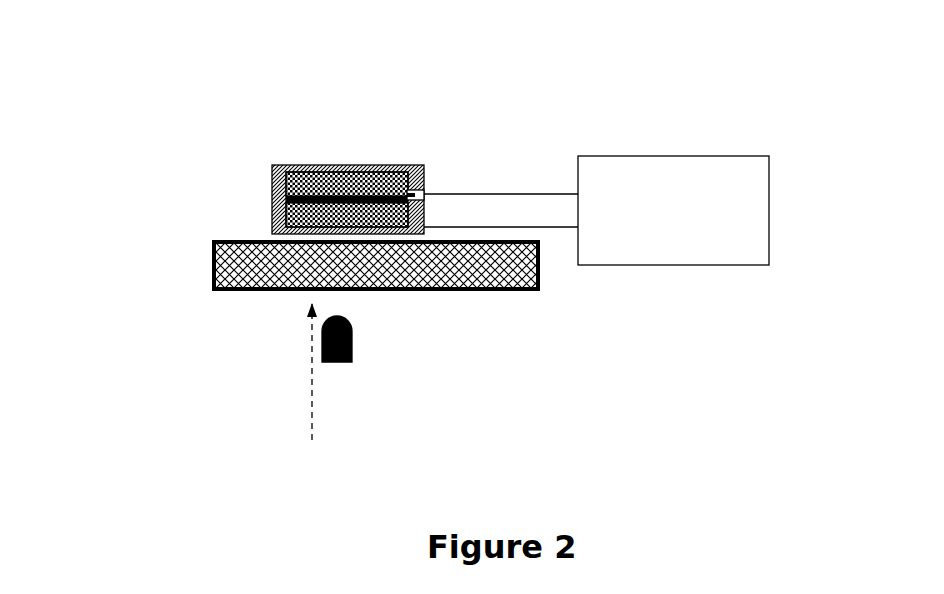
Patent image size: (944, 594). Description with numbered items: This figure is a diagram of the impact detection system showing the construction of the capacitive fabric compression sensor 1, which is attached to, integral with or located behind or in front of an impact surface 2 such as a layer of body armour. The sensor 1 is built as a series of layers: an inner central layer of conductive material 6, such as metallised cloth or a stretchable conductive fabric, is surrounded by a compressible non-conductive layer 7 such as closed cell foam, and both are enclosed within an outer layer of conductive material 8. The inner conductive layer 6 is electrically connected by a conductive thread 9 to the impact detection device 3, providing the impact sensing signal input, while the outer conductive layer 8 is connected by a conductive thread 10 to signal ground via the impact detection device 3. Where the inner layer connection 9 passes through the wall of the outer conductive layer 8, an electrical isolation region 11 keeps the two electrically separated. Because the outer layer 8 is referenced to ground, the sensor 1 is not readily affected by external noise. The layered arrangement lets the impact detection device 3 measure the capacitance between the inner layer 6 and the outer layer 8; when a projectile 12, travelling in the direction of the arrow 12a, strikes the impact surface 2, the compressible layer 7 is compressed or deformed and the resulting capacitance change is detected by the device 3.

The capacitive fabric compression sensor 1 is at (214, 157).
The impact surface 2 is at (508, 283).
The impact detection device 3 is at (705, 256).
The inner central layer of conductive material 6 is at (384, 190).
The compressible non-conductive layer 7 is at (296, 166).
The outer layer of conductive material 8 is at (296, 162).
The conductive thread 9 is at (498, 192).
The conductive thread 10 is at (551, 232).
The electrical isolation region 11 is at (428, 191).
The projectile 12 is at (355, 349).
The arrow 12a is at (316, 406).